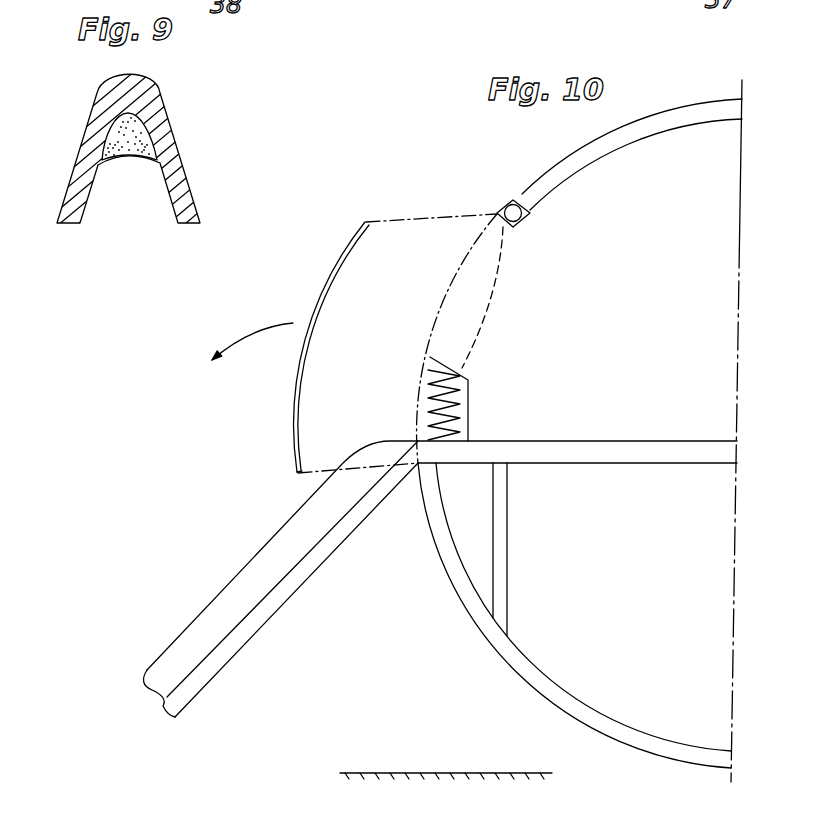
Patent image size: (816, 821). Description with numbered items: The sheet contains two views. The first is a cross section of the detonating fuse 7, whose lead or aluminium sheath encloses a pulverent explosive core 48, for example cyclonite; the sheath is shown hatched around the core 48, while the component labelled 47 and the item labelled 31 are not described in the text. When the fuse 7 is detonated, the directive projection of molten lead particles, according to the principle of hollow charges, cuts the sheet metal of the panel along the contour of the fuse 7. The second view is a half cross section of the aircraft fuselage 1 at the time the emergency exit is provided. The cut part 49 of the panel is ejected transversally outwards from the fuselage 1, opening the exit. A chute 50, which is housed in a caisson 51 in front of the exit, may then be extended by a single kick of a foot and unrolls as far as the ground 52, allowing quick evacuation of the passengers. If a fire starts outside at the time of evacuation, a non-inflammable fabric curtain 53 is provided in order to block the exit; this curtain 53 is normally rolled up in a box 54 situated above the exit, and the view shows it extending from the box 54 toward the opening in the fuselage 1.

In FIG. 10, the fuselage 1 is at (467, 617).
In FIG. 9, the cutting fuse 7 is at (155, 166).
In FIG. 10, the drum 31 is at (674, 322).
In FIG. 9, the hardened outer layer 47 is at (117, 100).
In FIG. 9, the pulverent explosive core 48 is at (107, 137).
In FIG. 10, the part of the panel 49 is at (331, 273).
In FIG. 10, the chute 50 is at (427, 384).
In FIG. 10, the caisson 51 is at (469, 397).
In FIG. 10, the ground 52 is at (420, 773).
In FIG. 10, the non-inflammable fabric curtain 53 is at (480, 318).
In FIG. 10, the box 54 is at (525, 222).